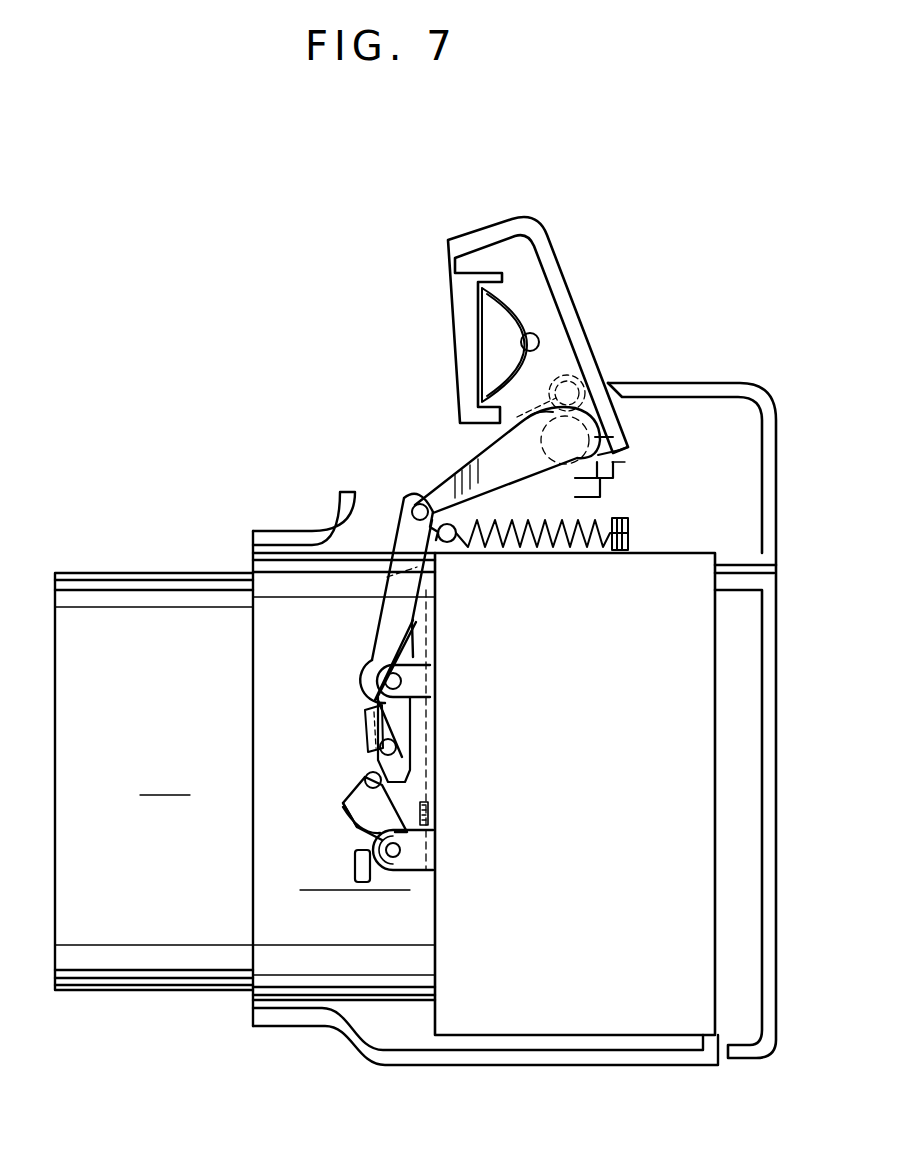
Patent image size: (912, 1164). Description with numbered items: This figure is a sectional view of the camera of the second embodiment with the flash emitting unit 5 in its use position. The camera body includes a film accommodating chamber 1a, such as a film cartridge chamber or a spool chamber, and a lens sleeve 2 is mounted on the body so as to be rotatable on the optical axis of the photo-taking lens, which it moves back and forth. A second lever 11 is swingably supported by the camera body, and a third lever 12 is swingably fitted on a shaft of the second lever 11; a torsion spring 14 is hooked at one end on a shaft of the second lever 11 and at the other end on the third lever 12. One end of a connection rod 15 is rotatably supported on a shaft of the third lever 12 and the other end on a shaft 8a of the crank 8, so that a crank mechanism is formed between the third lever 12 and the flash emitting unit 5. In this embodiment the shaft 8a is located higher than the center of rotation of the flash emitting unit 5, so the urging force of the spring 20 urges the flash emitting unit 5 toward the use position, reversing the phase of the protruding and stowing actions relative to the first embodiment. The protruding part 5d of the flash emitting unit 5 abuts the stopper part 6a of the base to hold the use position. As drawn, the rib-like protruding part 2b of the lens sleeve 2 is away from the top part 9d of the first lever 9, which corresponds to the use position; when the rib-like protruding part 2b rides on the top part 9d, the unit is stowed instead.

The film accommodating chamber 1a is at (703, 960).
The lens sleeve 2 is at (293, 980).
The rib-like protruding part 2b is at (367, 870).
The flash emitting unit 5 is at (527, 263).
The protruding part 5d is at (622, 462).
The stopper part 6a is at (607, 497).
The crank 8 is at (550, 470).
The shaft of the crank 8a is at (602, 373).
The first lever 9 is at (385, 810).
The top part 9d is at (348, 803).
The second lever 11 is at (402, 768).
The third lever 12 is at (397, 540).
The torsion spring 14 is at (410, 723).
The connection rod 15 is at (447, 490).
The spring 20 is at (580, 548).